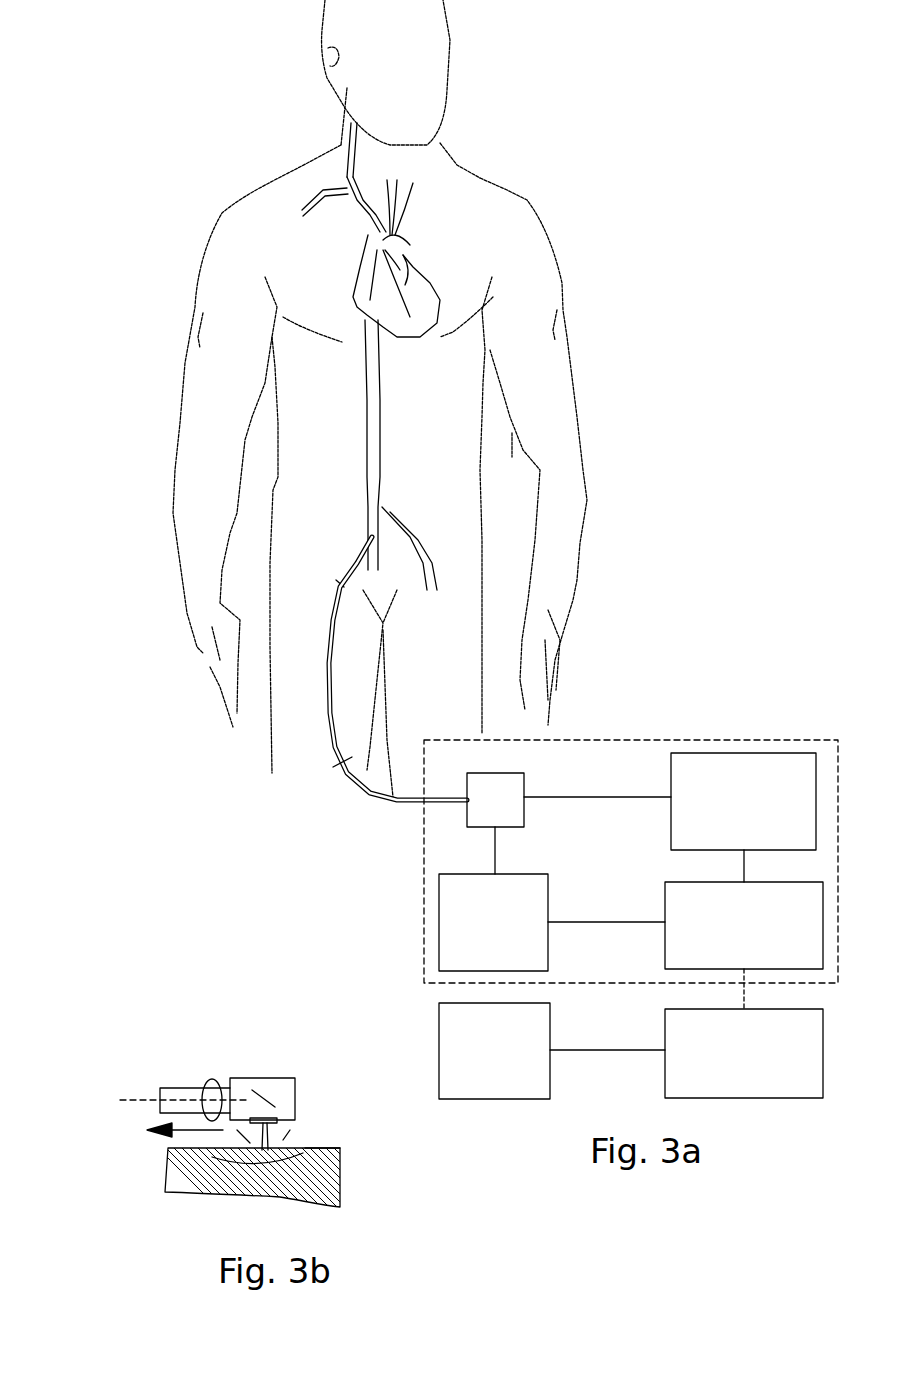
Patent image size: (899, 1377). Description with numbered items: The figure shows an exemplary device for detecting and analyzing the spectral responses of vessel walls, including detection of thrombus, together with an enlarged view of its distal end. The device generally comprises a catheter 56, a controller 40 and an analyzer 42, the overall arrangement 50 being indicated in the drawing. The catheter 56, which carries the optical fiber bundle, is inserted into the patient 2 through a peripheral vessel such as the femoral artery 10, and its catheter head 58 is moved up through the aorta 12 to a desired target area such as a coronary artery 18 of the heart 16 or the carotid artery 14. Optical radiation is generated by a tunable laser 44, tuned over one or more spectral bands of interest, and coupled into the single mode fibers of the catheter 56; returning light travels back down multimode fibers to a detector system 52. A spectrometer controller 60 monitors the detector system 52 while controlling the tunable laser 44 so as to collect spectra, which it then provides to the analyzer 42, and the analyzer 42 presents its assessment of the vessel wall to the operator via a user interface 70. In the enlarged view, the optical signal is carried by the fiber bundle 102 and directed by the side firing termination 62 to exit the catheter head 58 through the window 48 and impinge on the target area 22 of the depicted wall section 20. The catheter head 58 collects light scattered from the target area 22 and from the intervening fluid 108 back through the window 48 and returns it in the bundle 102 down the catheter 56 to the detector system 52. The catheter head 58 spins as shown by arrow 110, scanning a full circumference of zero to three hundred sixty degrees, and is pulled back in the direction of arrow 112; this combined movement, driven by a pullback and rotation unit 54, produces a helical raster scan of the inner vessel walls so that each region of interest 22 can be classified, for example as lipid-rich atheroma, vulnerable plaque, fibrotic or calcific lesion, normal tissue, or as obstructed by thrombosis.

In FIG. 3A, the patient 2 is at (580, 540).
In FIG. 3A, the femoral artery 10 is at (357, 547).
In FIG. 3A, the aorta 12 is at (365, 427).
In FIG. 3A, the carotid artery 14 is at (350, 160).
In FIG. 3A, the heart 16 is at (427, 290).
In FIG. 3A, the coronary artery 18 is at (412, 258).
In FIG. 3B, the tissue 20 is at (263, 1143).
In FIG. 3B, the target area 22 is at (305, 1146).
In FIG. 3A, the controller 40 is at (635, 740).
In FIG. 3A, the analyzer 42 is at (731, 1083).
In FIG. 3A, the tunable laser 44 is at (731, 842).
In FIG. 3B, the window 48 is at (267, 1145).
In FIG. 3A, the spectroscopy system 50 is at (592, 670).
In FIG. 3A, the detector system 52 is at (481, 963).
In FIG. 3A, the pullback and rotation unit 54 is at (524, 815).
In FIG. 3A, the catheter 56 is at (363, 792).
In FIG. 3B, the catheter 56 is at (173, 1087).
In FIG. 3A, the catheter head 58 is at (403, 283).
In FIG. 3B, the catheter head 58 is at (297, 1093).
In FIG. 3A, the spectrometer controller 60 is at (731, 965).
In FIG. 3B, the side firing termination 62 is at (263, 1098).
In FIG. 3A, the user interface 70 is at (481, 1088).
In FIG. 3B, the fiber bundle 102 is at (190, 1098).
In FIG. 3B, the intervening fluid 108 is at (300, 1118).
In FIG. 3B, the arrow 110 is at (218, 1078).
In FIG. 3B, the arrow 112 is at (223, 1130).